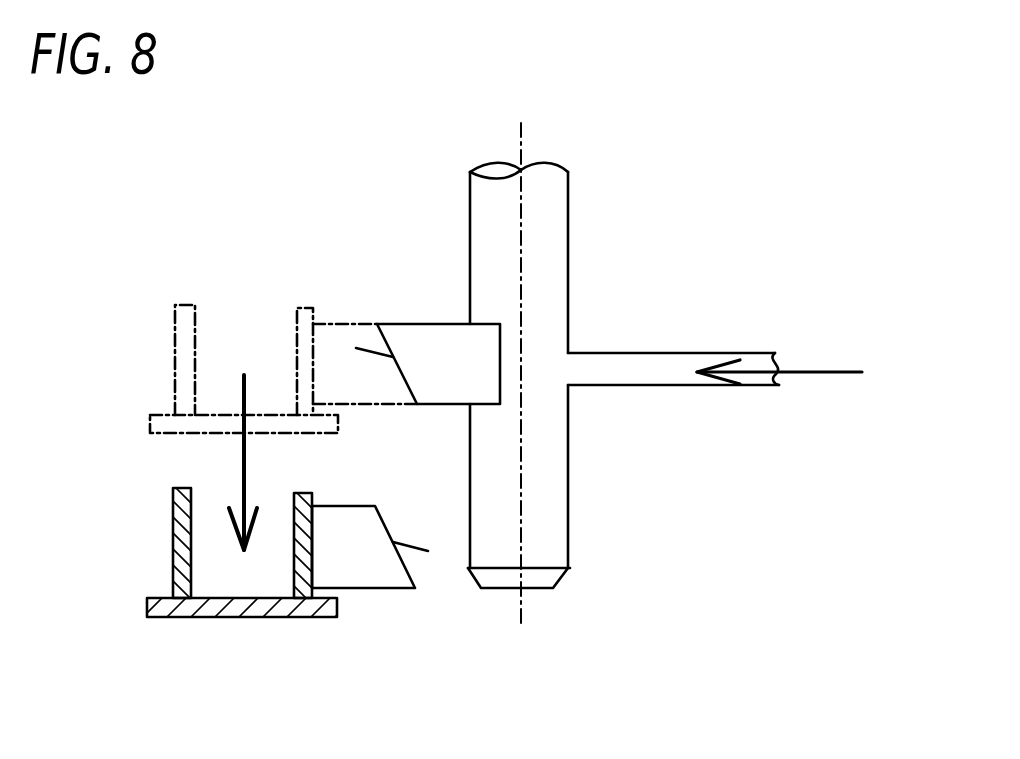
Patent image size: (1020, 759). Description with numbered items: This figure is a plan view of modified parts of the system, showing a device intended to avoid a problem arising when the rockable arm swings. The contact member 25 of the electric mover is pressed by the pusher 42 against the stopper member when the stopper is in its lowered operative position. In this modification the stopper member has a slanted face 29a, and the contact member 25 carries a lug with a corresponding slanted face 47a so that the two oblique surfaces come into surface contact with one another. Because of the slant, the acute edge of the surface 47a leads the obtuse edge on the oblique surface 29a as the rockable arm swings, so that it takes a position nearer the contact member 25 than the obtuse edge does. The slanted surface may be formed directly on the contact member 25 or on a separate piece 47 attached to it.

The contact member 25 is at (545, 494).
The pusher 42 is at (651, 368).
The separate piece 47 is at (439, 353).
The slanted face 47a is at (356, 348).
The slanted face 29a is at (428, 551).